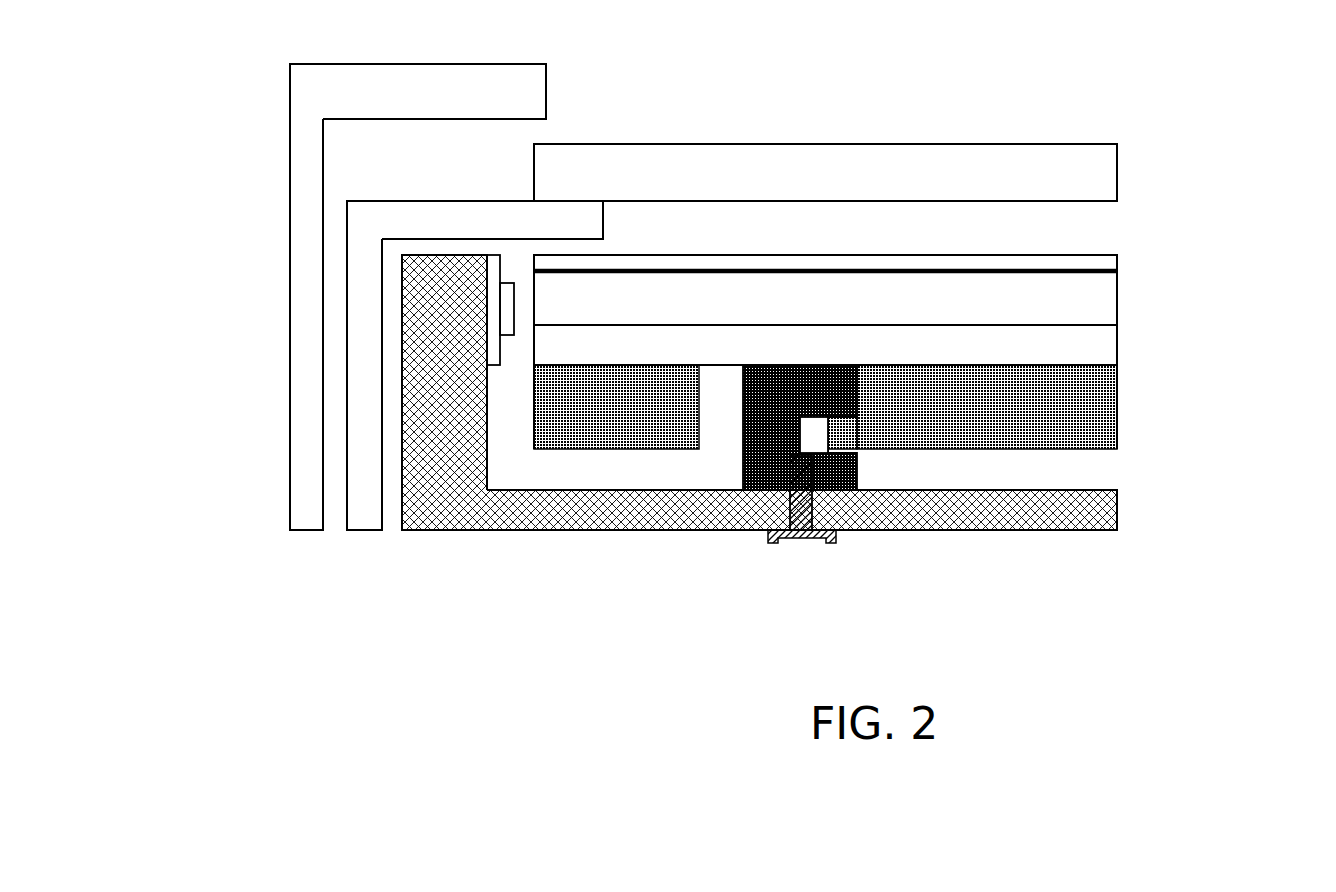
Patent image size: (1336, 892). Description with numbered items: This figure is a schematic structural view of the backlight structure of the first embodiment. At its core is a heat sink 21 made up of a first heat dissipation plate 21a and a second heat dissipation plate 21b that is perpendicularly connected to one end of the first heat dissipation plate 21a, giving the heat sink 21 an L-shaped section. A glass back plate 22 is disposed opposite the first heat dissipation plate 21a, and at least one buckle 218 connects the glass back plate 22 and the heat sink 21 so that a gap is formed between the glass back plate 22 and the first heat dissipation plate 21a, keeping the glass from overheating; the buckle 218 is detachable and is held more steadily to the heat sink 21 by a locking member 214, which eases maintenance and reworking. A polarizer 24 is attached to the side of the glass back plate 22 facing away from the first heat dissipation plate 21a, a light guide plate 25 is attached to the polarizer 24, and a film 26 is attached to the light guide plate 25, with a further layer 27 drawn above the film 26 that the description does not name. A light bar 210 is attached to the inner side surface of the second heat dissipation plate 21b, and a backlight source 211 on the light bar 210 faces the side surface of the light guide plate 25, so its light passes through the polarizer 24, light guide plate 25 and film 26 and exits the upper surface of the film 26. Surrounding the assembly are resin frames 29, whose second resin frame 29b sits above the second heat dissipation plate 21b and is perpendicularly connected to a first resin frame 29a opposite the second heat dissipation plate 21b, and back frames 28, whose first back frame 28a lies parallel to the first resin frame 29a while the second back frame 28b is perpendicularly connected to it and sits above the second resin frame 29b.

The heat sink 21 is at (178, 343).
The first heat dissipation plate 21a is at (465, 527).
The second heat dissipation plate 21b is at (402, 425).
The light bar 210 is at (487, 272).
The backlight source 211 is at (500, 326).
The locking member 214 is at (806, 545).
The buckle 218 is at (742, 438).
The glass back plate 22 is at (1117, 395).
The polarizer 24 is at (1117, 347).
The light guide plate 25 is at (1117, 290).
The film 26 is at (1068, 255).
The cover plate 27 is at (1117, 162).
The back frame 28 is at (158, 28).
The first back frame 28a is at (290, 150).
The second back frame 28b is at (378, 62).
The resin frame 29 is at (178, 135).
The first resin frame 29a is at (346, 257).
The second resin frame 29b is at (443, 200).